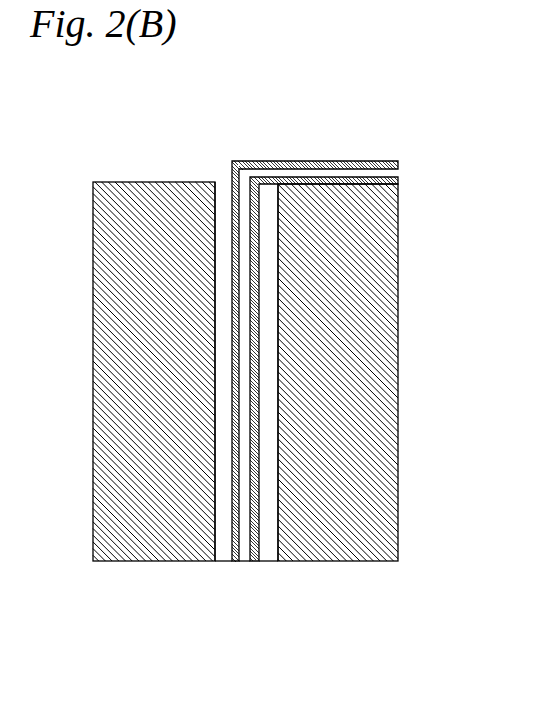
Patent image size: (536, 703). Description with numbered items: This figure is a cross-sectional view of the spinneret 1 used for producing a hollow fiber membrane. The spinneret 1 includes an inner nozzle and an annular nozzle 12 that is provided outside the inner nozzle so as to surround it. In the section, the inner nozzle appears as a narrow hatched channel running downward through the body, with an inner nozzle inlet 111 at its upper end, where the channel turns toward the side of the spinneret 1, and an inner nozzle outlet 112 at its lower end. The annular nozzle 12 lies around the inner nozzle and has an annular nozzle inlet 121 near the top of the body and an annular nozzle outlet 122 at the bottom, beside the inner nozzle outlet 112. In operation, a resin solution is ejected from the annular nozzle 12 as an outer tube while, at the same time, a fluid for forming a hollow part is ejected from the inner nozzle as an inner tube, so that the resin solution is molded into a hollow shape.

The spinneret 1 is at (297, 368).
The inner nozzle inlet 111 is at (404, 172).
The inner nozzle outlet 112 is at (250, 565).
The annular nozzle 12 is at (270, 458).
The annular nozzle inlet 121 is at (223, 178).
The annular nozzle outlet 122 is at (271, 564).